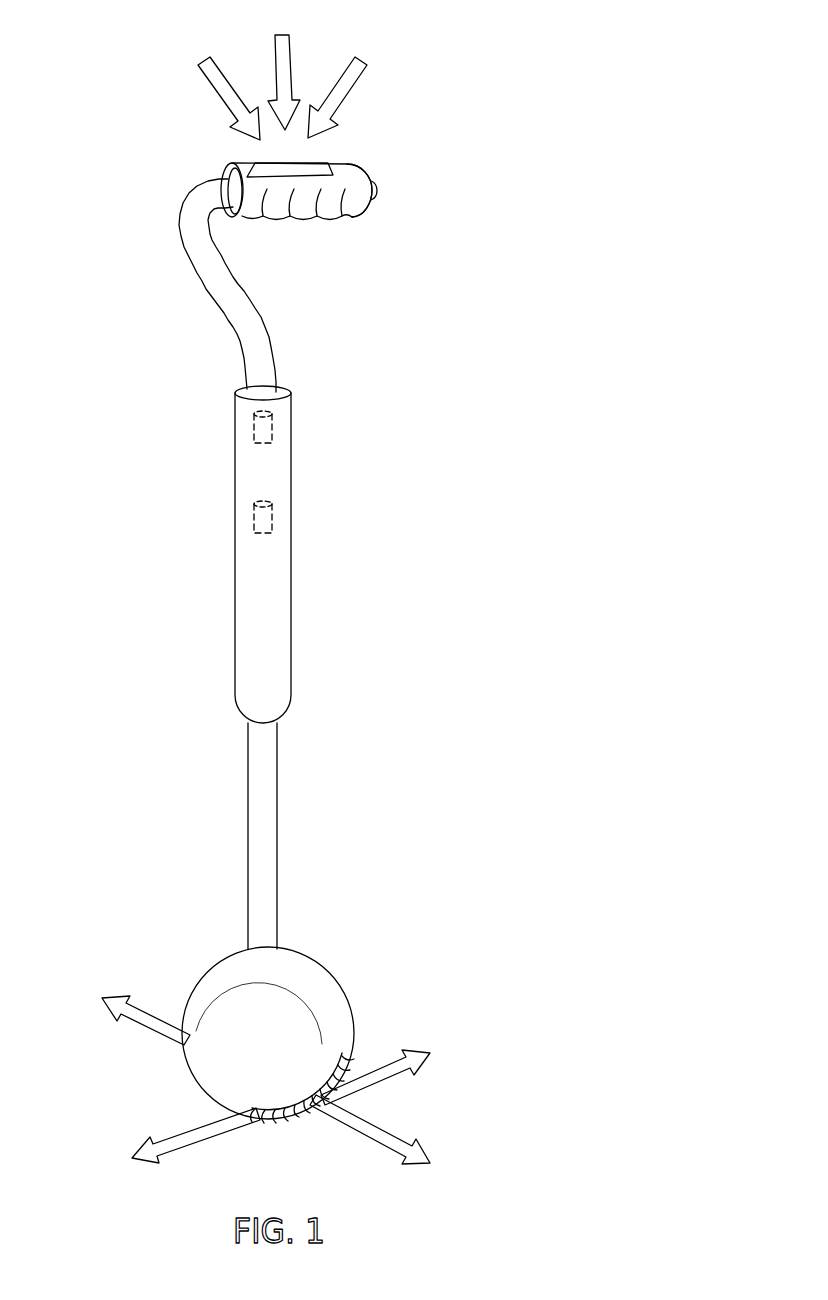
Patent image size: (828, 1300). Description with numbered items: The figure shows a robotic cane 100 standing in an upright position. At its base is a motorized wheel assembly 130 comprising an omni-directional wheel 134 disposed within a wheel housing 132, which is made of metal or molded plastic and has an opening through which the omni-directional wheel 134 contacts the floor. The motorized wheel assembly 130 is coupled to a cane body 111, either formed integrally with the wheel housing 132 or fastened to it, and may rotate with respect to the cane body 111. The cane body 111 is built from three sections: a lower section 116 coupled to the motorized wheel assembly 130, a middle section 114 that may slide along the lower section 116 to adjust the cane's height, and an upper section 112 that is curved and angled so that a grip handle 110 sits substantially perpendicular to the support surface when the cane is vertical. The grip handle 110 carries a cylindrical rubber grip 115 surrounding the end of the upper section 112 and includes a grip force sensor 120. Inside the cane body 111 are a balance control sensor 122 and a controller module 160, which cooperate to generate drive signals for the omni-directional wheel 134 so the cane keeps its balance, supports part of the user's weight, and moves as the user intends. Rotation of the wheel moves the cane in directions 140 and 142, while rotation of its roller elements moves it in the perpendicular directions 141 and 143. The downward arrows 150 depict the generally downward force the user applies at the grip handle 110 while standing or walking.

The robotic cane 100 is at (355, 587).
The grip handle 110 is at (318, 181).
The cane body 111 is at (245, 564).
The upper section 112 is at (202, 273).
The middle section 114 is at (235, 495).
The grip 115 is at (353, 218).
The lower section 116 is at (248, 793).
The grip force sensor 120 is at (252, 170).
The balance control sensor 122 is at (278, 432).
The motorized wheel assembly 130 is at (238, 1017).
The wheel housing 132 is at (212, 1008).
The omni-directional wheel 134 is at (298, 1125).
The direction of travel 140 is at (105, 1007).
The direction of travel 141 is at (173, 1132).
The direction of travel 142 is at (397, 1136).
The direction of travel 143 is at (405, 1047).
The downward arrows 150 is at (228, 79).
The controller module 160 is at (278, 522).